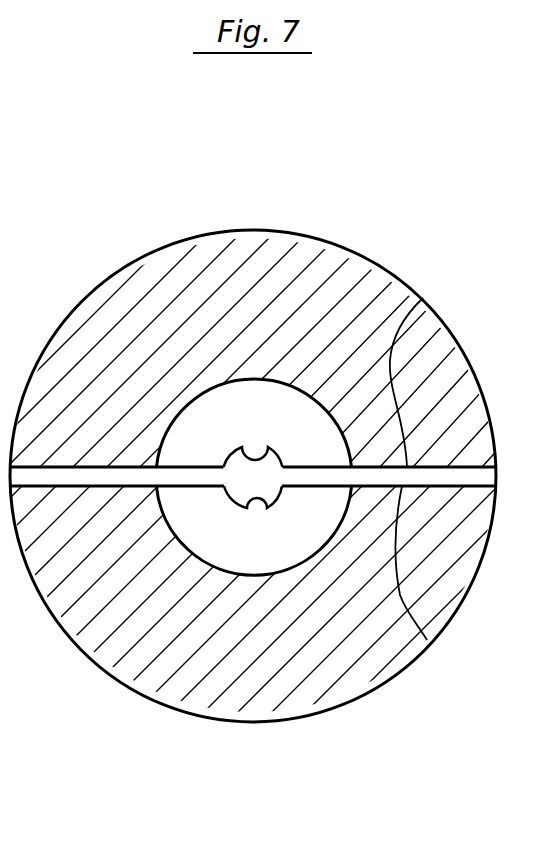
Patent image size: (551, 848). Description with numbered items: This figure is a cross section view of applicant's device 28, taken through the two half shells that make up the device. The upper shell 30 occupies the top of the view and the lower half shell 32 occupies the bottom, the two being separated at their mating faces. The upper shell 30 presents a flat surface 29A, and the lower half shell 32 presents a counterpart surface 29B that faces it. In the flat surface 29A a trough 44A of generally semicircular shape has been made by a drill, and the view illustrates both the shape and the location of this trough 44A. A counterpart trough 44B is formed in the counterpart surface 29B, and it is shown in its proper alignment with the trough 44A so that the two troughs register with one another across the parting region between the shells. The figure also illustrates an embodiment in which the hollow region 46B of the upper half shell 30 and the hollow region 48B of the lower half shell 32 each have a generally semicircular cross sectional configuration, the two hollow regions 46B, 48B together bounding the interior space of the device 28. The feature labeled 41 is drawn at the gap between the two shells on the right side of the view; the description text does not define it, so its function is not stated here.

The device 28 is at (137, 243).
The upper shell 30 is at (343, 248).
The half shell 32 is at (302, 715).
The flat surface 29A is at (423, 298).
The counterpart surface 29B is at (427, 640).
The slit 41 is at (483, 477).
The trough 44A is at (267, 451).
The counterpart trough 44B is at (252, 506).
The hollow region 46B is at (257, 423).
The hollow region 48B is at (325, 537).